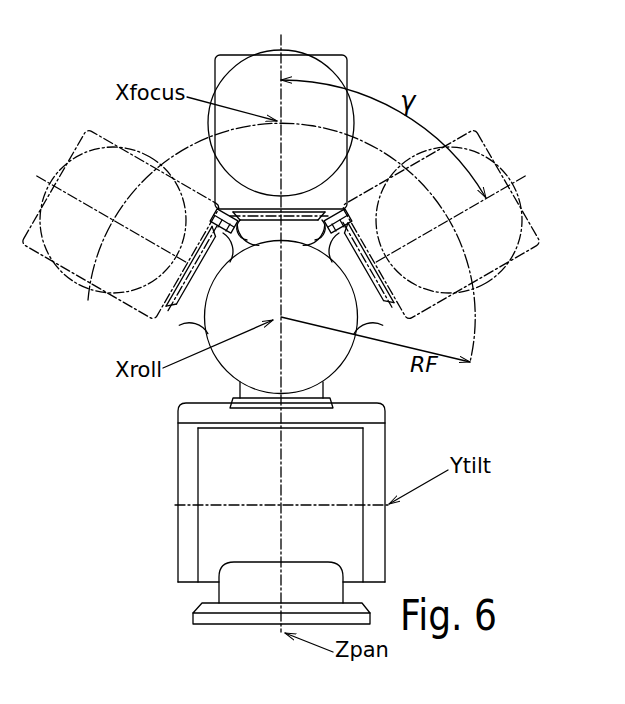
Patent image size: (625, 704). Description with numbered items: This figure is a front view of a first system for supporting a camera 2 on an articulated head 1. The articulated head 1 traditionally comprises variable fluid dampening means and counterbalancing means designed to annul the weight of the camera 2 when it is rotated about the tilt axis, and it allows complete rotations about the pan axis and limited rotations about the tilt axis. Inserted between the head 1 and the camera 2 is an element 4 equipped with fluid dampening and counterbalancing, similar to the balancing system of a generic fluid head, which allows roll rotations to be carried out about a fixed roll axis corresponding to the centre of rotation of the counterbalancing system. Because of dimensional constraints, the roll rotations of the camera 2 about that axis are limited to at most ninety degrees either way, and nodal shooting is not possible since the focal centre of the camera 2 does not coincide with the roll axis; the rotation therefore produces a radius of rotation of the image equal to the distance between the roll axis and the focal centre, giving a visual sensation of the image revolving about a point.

The articulated head 1 is at (178, 525).
The camera 2 is at (332, 66).
The element equipped with fluid dampening and counterbalancing 4 is at (223, 372).